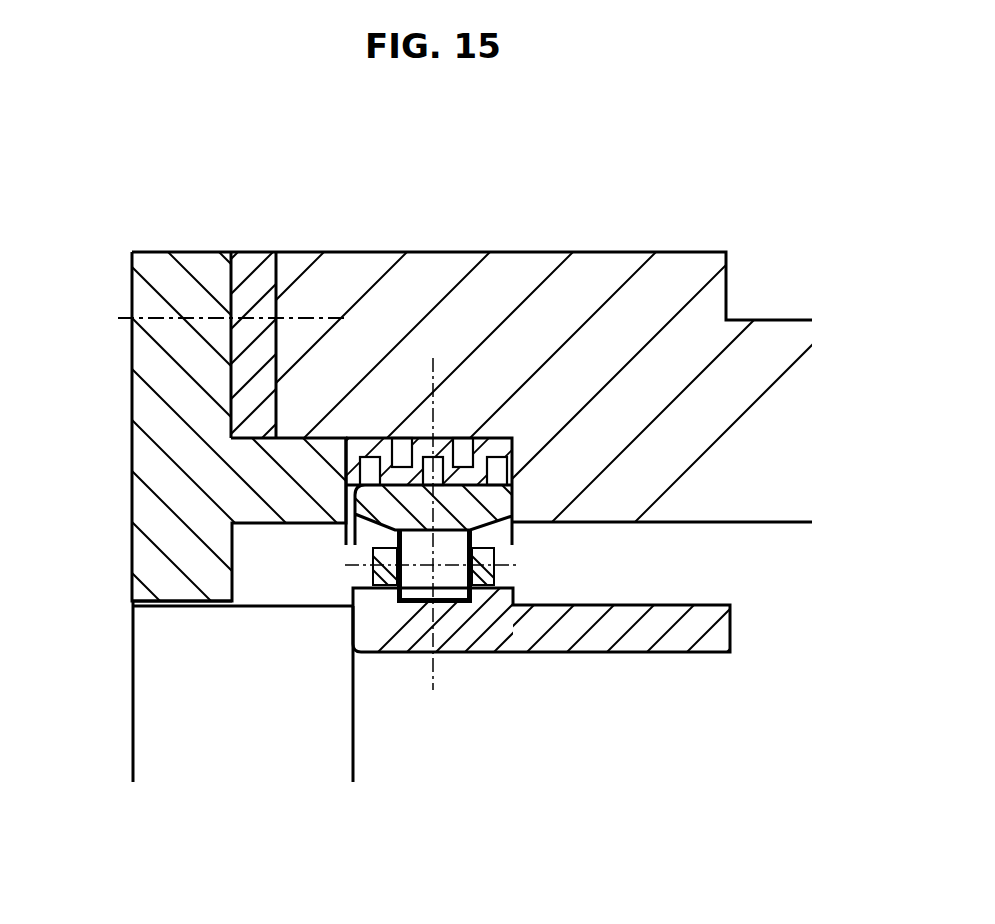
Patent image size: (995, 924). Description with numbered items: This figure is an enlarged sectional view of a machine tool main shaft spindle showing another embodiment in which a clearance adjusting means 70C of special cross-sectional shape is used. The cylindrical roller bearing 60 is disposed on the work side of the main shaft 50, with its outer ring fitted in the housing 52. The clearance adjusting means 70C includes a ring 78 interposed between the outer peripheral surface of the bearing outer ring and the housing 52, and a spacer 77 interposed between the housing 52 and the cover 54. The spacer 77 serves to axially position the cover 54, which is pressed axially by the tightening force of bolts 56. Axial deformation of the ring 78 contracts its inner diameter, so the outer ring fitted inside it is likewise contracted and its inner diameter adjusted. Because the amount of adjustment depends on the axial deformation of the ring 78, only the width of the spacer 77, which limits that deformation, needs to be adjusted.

The main shaft 50 is at (173, 697).
The housing 52 is at (677, 283).
The cover 54 is at (192, 268).
The bolts 56 is at (162, 318).
The cylindrical roller bearing 60 is at (487, 679).
The clearance adjusting means 70C is at (242, 474).
The spacer 77 is at (252, 282).
The ring 78 is at (440, 437).